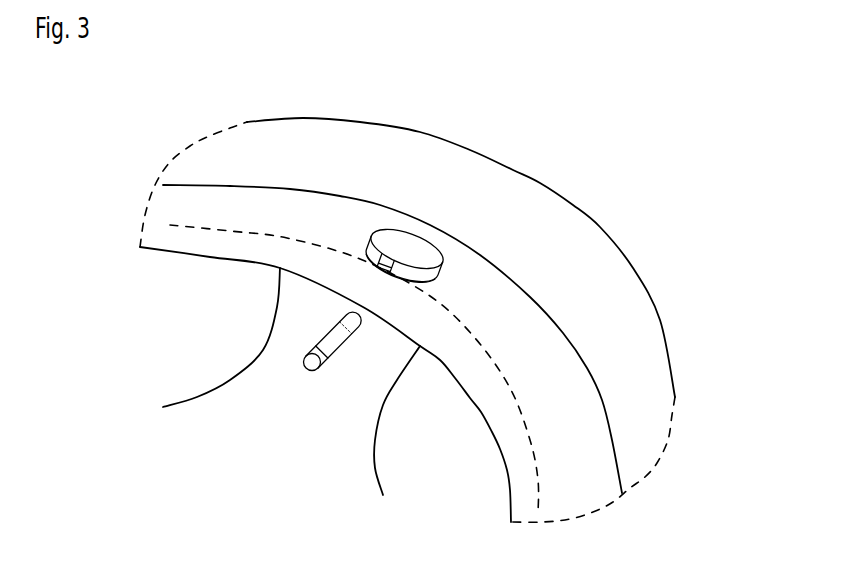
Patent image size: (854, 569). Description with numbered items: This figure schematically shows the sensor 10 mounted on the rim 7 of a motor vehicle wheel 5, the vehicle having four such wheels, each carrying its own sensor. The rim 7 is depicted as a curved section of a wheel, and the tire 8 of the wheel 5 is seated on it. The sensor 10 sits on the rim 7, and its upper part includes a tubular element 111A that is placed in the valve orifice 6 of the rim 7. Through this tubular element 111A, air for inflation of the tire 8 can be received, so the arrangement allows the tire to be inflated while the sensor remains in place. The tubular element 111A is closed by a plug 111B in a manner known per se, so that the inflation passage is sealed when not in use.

The wheel 5 is at (617, 124).
The valve orifice 6 is at (360, 333).
The rim 7 is at (197, 397).
The tire 8 is at (647, 295).
The sensor 10 is at (413, 236).
The tubular element 111A is at (327, 343).
The plug 111B is at (304, 356).